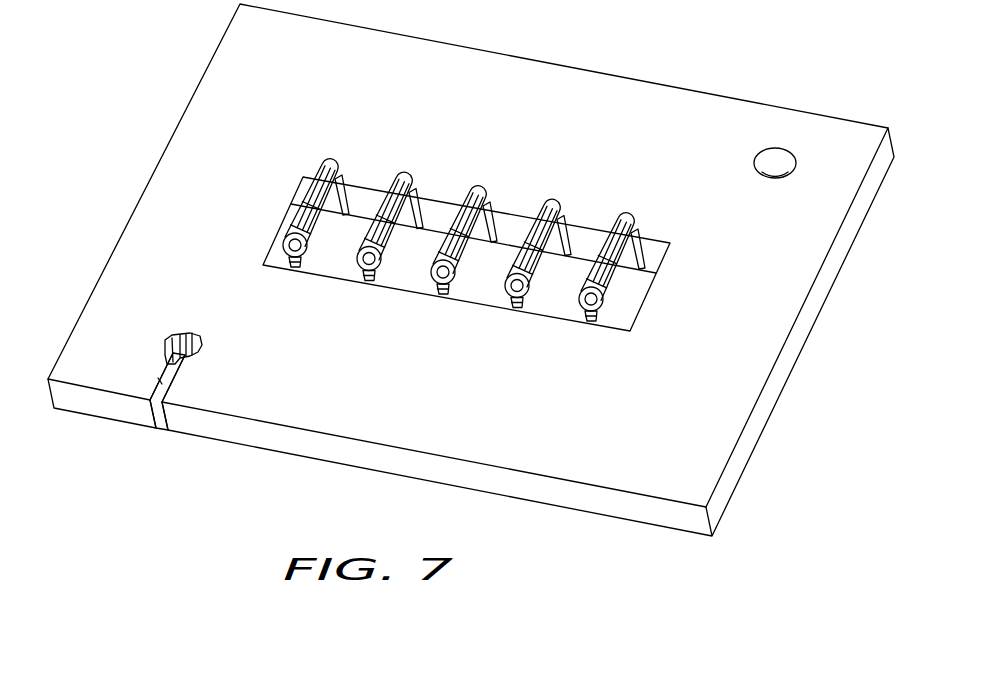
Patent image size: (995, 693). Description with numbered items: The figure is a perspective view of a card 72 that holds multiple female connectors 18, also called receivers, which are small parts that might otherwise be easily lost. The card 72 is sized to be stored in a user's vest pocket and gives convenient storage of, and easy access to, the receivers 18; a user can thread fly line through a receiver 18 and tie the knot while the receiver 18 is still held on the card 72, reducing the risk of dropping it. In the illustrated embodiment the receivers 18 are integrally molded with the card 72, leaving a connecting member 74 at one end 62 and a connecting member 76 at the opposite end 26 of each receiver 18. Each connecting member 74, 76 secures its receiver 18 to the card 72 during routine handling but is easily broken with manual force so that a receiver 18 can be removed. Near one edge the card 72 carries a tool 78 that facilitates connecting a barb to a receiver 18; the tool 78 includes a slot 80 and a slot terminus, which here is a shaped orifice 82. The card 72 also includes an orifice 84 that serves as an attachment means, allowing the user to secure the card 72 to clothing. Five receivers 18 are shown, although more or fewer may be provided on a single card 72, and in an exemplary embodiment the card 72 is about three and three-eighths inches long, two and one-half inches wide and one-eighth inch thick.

The card 72 is at (517, 75).
The orifice 84 is at (775, 158).
The connecting member 74 is at (647, 243).
The female connector 18 is at (464, 261).
The end 62 is at (574, 272).
The end 26 is at (553, 328).
The connecting member 76 is at (577, 354).
The tool 78 is at (137, 341).
The slot 80 is at (163, 372).
The shaped orifice 82 is at (190, 337).